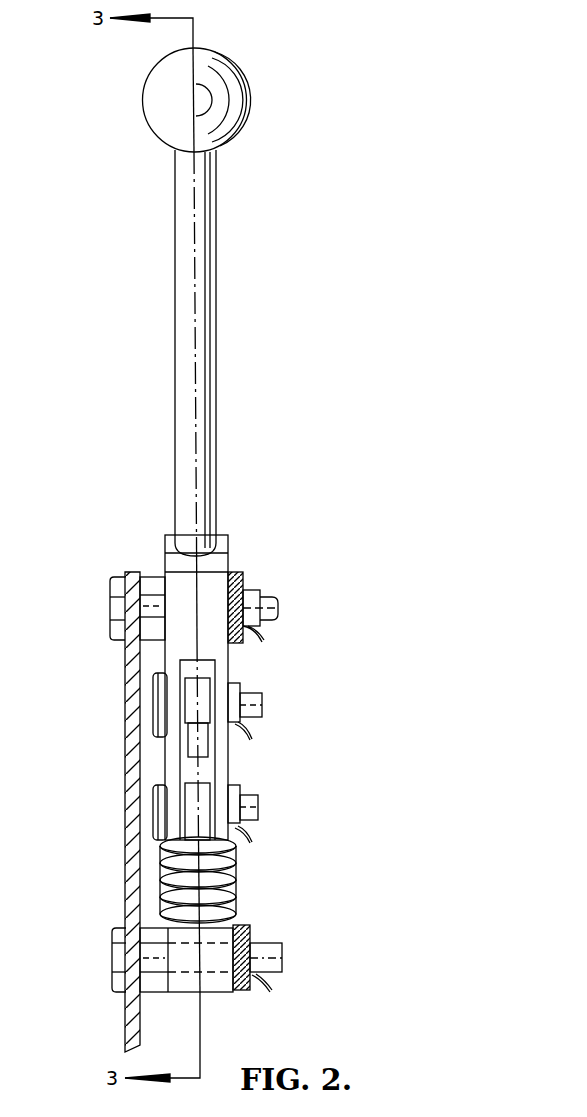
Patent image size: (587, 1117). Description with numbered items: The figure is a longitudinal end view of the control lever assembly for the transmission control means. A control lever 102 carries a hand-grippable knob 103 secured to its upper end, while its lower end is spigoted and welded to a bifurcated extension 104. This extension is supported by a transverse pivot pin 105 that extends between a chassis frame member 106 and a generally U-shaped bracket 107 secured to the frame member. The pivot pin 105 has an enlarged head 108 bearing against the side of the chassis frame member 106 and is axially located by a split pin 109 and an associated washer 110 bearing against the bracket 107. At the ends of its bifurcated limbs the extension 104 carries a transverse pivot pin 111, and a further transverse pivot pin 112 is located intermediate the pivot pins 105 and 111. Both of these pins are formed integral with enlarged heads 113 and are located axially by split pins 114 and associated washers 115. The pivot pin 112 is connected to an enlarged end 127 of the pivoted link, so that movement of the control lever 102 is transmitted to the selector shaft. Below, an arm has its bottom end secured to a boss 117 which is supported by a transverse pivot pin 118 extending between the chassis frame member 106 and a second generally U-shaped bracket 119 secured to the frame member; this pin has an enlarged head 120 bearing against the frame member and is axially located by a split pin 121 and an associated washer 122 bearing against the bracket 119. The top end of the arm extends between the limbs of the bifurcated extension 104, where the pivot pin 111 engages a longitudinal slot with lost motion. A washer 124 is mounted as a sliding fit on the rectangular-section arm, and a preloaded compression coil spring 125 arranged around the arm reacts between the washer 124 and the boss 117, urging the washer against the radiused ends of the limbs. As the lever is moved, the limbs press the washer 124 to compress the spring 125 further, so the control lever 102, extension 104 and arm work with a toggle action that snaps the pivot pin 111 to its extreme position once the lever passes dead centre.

The control lever 102 is at (203, 325).
The hand-grippable knob 103 is at (188, 110).
The bifurcated extension 104 is at (216, 572).
The transverse pivot pin 105 is at (155, 600).
The chassis frame member 106 is at (132, 706).
The generally U-shaped bracket 107 is at (238, 585).
The enlarged head 108 is at (120, 597).
The split pin 109 is at (258, 637).
The washer 110 is at (256, 592).
The transverse pivot pin 111 is at (252, 803).
The further transverse pivot pin 112 is at (255, 703).
The enlarged heads 113 is at (158, 725).
The split pins 114 is at (243, 688).
The washers 115 is at (235, 735).
The boss 117 is at (208, 965).
The transverse pivot pin 118 is at (150, 965).
The second generally U-shaped bracket 119 is at (250, 985).
The enlarged head 120 is at (118, 952).
The split pin 121 is at (265, 990).
The washer 122 is at (250, 935).
The washer 124 is at (238, 850).
The preloaded compression coil spring 125 is at (228, 883).
The enlarged end 127 is at (197, 690).